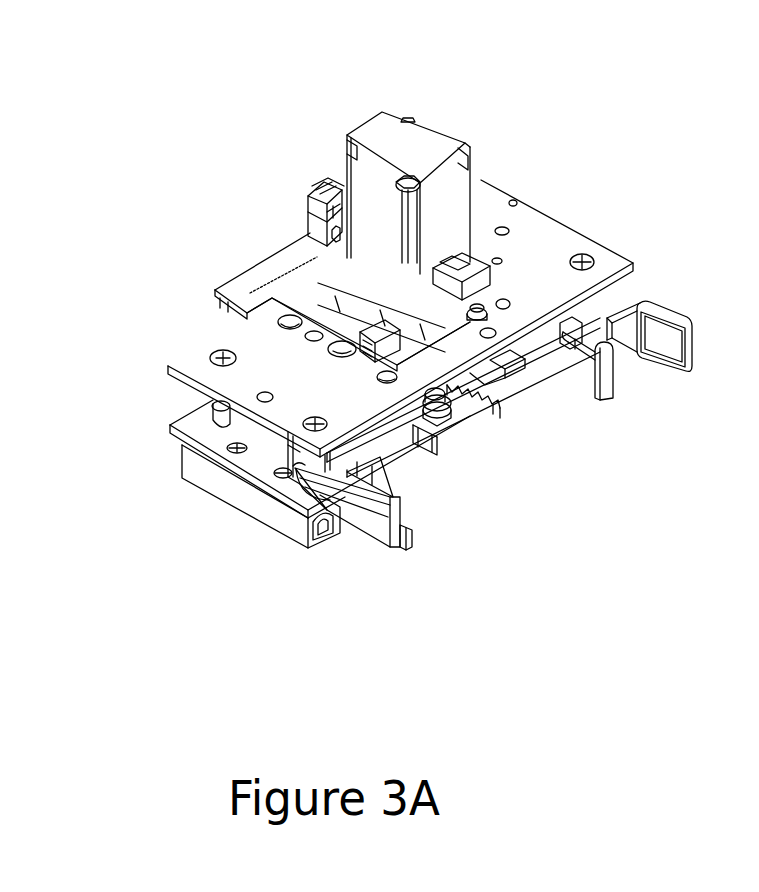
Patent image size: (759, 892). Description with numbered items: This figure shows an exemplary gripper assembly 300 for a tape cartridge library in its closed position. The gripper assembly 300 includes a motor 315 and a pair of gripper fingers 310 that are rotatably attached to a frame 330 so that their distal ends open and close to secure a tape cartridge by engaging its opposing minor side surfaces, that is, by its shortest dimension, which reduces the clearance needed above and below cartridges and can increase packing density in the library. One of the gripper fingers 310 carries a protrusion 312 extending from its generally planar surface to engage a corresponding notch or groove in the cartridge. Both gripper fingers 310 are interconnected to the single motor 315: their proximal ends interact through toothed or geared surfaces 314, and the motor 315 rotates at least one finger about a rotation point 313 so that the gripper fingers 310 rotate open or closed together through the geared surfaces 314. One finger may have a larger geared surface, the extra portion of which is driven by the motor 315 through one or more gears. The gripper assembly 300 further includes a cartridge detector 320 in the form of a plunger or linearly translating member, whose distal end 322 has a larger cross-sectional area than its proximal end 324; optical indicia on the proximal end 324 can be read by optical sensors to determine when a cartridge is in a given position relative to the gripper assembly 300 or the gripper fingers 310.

The gripper assembly 300 is at (545, 176).
The gripper fingers 310 is at (667, 313).
The protrusion 312 is at (408, 545).
The rotation point 313 is at (583, 261).
The geared surfaces 314 is at (462, 407).
The motor 315 is at (360, 218).
The cartridge detector 320 is at (595, 422).
The distal end 322 is at (610, 377).
The proximal end 324 is at (566, 345).
The frame 330 is at (285, 488).